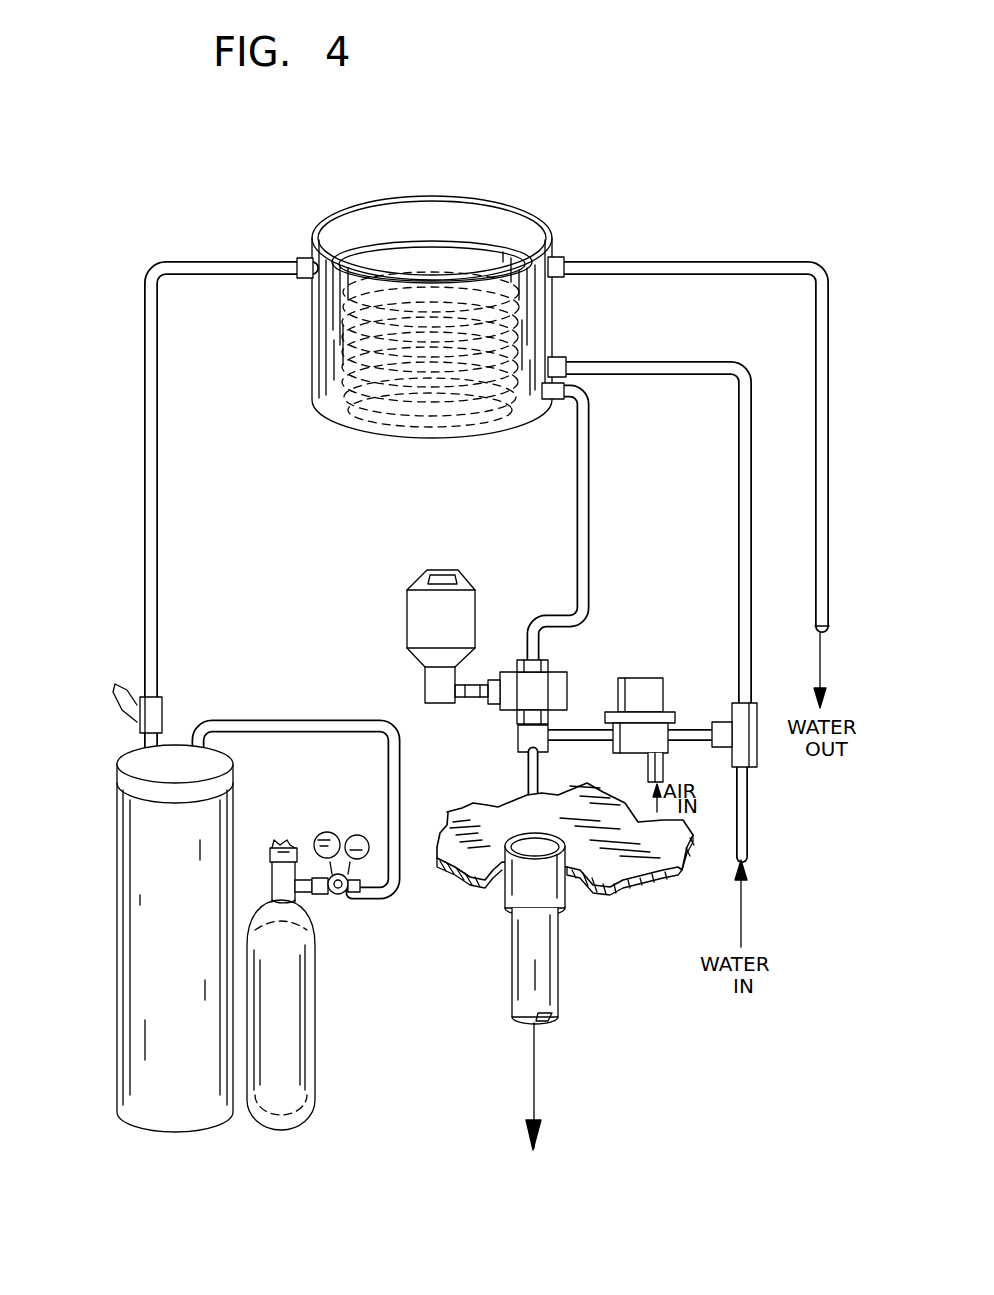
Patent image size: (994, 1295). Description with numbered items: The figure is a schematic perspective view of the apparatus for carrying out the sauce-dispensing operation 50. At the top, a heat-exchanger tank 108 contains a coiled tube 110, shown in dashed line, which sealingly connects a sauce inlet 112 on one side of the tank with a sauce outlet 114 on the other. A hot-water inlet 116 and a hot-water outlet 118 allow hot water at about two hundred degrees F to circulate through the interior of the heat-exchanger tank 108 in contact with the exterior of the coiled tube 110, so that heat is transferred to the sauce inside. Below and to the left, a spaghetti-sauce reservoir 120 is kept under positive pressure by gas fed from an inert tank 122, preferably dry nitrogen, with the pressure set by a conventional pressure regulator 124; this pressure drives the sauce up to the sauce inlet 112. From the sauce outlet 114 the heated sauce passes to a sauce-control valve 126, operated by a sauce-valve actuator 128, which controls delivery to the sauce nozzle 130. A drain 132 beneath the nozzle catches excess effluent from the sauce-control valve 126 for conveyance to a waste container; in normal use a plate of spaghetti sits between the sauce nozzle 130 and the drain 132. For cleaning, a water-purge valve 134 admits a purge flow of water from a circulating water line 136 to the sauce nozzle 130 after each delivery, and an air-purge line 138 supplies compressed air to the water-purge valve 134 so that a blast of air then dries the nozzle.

The sauce-dispensing operation 50 is at (745, 200).
The heat-exchanger tank 108 is at (505, 203).
The coiled tube 110 is at (390, 240).
The sauce inlet 112 is at (299, 259).
The sauce outlet 114 is at (548, 400).
The hot-water inlet 116 is at (557, 357).
The hot-water outlet 118 is at (562, 258).
The spaghetti-sauce reservoir 120 is at (133, 888).
The inert tank 122 is at (300, 1040).
The pressure regulator 124 is at (345, 895).
The sauce-control valve 126 is at (556, 680).
The sauce-valve actuator 128 is at (415, 605).
The sauce nozzle 130 is at (528, 777).
The drain 132 is at (515, 900).
The water-purge valve 134 is at (648, 690).
The circulating water line 136 is at (748, 832).
The air-purge line 138 is at (650, 772).